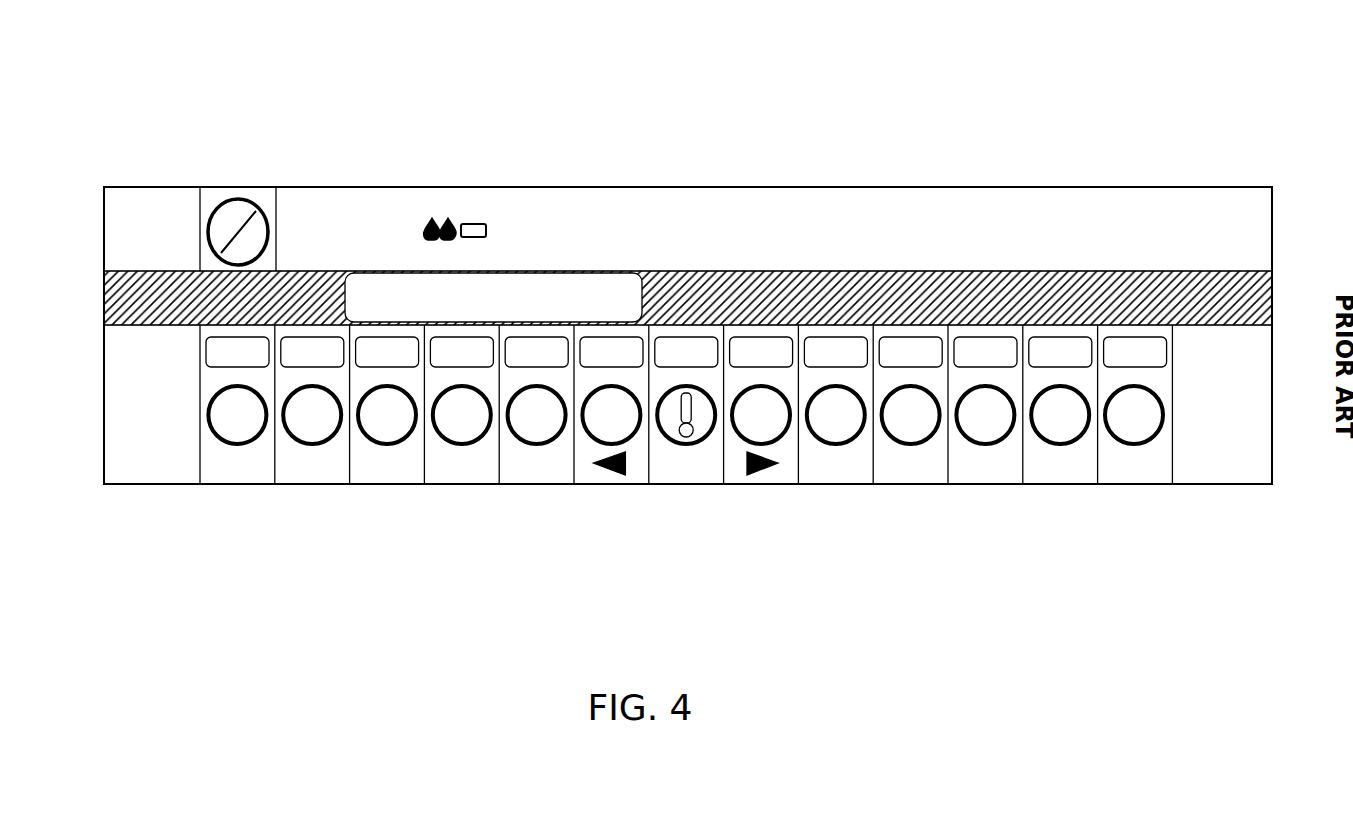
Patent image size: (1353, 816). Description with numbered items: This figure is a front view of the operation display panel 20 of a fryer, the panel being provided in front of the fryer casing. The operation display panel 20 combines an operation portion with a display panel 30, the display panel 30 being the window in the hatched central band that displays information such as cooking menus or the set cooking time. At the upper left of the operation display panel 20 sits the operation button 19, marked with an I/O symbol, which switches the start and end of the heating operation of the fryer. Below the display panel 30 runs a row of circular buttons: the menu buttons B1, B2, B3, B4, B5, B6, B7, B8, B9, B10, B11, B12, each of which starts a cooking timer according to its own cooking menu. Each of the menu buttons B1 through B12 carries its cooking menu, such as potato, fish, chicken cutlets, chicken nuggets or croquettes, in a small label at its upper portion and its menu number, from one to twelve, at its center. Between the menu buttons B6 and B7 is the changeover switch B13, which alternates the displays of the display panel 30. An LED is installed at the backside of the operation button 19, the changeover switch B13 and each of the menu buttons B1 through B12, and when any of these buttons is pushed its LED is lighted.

The operation display panel 20 is at (806, 136).
The operation button 19 is at (247, 200).
The display panel 30 is at (590, 272).
The menu button B1 is at (234, 445).
The menu button B2 is at (309, 445).
The menu button B3 is at (384, 445).
The menu button B4 is at (459, 445).
The menu button B5 is at (534, 445).
The menu button B6 is at (608, 445).
The changeover switch B13 is at (683, 445).
The menu button B7 is at (758, 445).
The menu button B8 is at (833, 445).
The menu button B9 is at (908, 445).
The menu button B10 is at (982, 445).
The menu button B11 is at (1057, 445).
The menu button B12 is at (1131, 445).